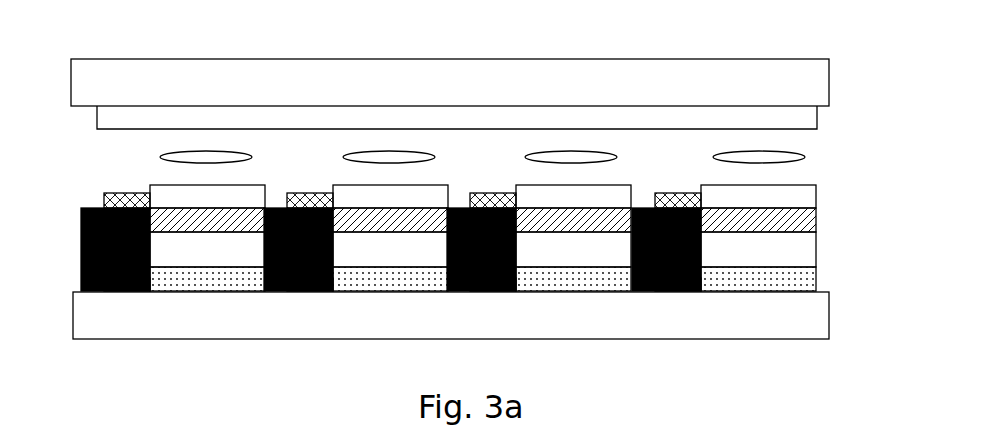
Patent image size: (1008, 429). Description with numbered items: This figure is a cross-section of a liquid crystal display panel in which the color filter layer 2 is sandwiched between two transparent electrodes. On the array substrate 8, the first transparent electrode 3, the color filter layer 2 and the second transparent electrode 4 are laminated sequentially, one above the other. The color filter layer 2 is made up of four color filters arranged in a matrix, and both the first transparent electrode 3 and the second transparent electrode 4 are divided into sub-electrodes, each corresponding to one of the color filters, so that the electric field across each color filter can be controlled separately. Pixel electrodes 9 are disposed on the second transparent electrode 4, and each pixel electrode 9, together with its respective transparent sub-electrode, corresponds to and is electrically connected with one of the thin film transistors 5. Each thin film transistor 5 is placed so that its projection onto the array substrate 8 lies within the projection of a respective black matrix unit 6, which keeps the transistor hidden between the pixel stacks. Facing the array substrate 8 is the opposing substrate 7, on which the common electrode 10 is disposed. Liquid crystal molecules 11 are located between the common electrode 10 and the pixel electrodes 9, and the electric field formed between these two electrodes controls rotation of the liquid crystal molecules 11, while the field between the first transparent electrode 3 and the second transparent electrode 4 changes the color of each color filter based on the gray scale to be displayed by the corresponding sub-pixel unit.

The color filter layer 2 is at (785, 249).
The first transparent electrode 3 is at (227, 285).
The second transparent electrode 4 is at (188, 220).
The thin film transistor 5 is at (104, 283).
The black matrix unit 6 is at (458, 293).
The opposing substrate 7 is at (677, 79).
The array substrate 8 is at (717, 315).
The pixel electrode 9 is at (775, 199).
The common electrode 10 is at (785, 119).
The liquid crystal molecules 11 is at (390, 157).